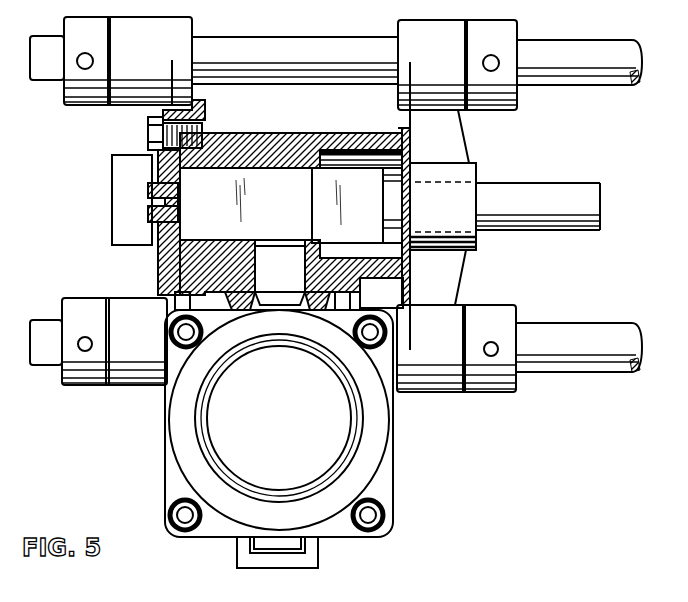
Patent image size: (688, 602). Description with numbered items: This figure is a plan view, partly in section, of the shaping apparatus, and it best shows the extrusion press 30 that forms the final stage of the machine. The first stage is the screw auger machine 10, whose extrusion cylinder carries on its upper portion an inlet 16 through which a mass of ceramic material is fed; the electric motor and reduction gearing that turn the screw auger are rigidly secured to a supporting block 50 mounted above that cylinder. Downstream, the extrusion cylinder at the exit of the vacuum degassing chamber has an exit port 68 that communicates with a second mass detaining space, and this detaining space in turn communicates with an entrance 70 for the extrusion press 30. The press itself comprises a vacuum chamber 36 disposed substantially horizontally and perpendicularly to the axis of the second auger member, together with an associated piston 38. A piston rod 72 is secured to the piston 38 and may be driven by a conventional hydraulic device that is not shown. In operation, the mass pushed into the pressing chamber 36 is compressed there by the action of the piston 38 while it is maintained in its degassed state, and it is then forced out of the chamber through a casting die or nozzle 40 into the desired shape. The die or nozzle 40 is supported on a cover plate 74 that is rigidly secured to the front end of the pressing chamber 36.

The screw auger machine 10 is at (393, 466).
The inlet 16 is at (283, 548).
The extrusion press 30 is at (336, 122).
The vacuum chamber 36 is at (246, 204).
The piston 38 is at (347, 205).
The casting die or nozzle 40 is at (156, 187).
The supporting block 50 is at (279, 420).
The exit port 68 is at (262, 292).
The entrance 70 is at (290, 244).
The piston rod 72 is at (540, 193).
The cover plate 74 is at (160, 262).